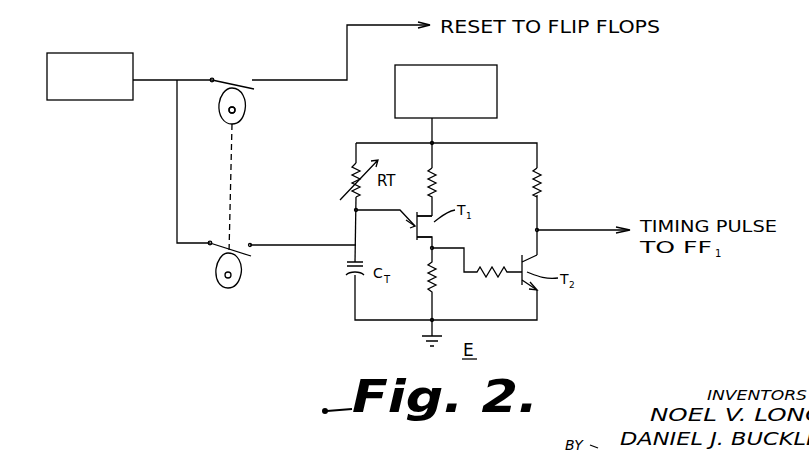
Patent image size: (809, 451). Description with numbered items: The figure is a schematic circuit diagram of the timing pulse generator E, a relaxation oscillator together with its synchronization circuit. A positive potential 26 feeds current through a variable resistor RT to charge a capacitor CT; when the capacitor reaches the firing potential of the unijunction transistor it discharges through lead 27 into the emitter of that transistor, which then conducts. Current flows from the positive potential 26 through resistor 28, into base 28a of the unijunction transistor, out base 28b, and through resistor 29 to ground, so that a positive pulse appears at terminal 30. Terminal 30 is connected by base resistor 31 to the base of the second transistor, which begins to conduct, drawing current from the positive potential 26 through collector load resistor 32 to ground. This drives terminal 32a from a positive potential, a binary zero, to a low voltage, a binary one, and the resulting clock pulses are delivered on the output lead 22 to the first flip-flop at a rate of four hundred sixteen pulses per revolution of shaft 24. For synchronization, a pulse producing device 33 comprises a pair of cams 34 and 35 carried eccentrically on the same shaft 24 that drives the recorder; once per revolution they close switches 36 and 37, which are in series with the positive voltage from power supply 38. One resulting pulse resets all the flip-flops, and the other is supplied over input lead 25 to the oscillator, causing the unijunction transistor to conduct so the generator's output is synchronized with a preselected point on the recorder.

The power supply 38 is at (110, 53).
The switch 36 is at (234, 87).
The cam 34 is at (238, 100).
The shaft 24 is at (247, 110).
The cam 35 is at (222, 262).
The switch 37 is at (232, 247).
The input lead 25 is at (270, 245).
The pulse producing device 33 is at (158, 176).
The positive potential 26 is at (497, 91).
The lead 27 is at (388, 242).
The resistor 28 is at (436, 182).
The base of transistor T1 28a is at (432, 216).
The base of transistor T1 28b is at (432, 236).
The resistor 29 is at (435, 286).
The terminal 30 is at (437, 252).
The base resistor 31 is at (480, 266).
The collector load resistor 32 is at (540, 185).
The terminal 32a is at (540, 232).
The output lead 22 is at (560, 230).